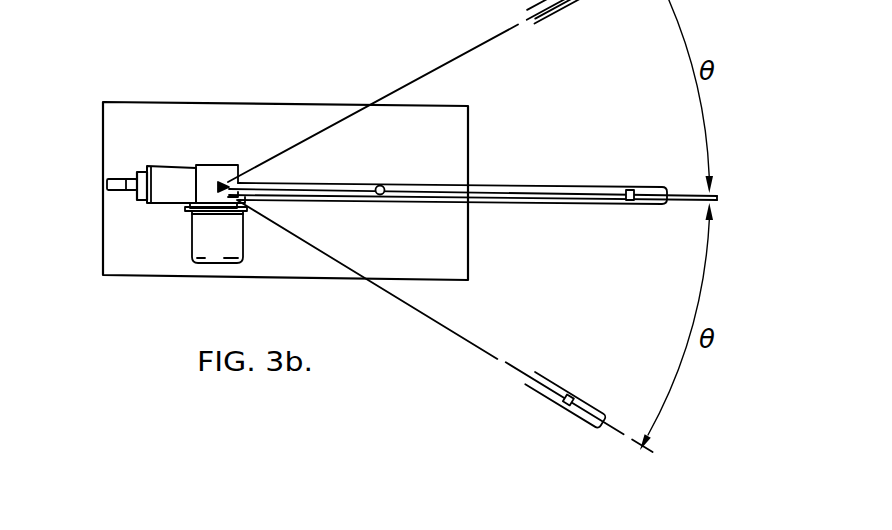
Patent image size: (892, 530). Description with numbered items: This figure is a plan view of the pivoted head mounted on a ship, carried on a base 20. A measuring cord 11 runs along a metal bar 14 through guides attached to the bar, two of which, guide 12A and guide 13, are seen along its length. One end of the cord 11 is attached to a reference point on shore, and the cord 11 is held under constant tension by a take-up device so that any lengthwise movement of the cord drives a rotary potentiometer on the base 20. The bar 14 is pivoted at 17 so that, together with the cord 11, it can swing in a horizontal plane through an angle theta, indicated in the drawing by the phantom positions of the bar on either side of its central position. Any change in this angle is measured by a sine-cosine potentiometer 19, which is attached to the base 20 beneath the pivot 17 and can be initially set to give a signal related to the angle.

The measuring cord 11 is at (491, 197).
The guide 12A is at (386, 194).
The guide 13 is at (637, 200).
The metal bar 14 is at (563, 200).
The pivot 17 is at (219, 178).
The sine-cosine potentiometer 19 is at (230, 243).
The base 20 is at (111, 233).